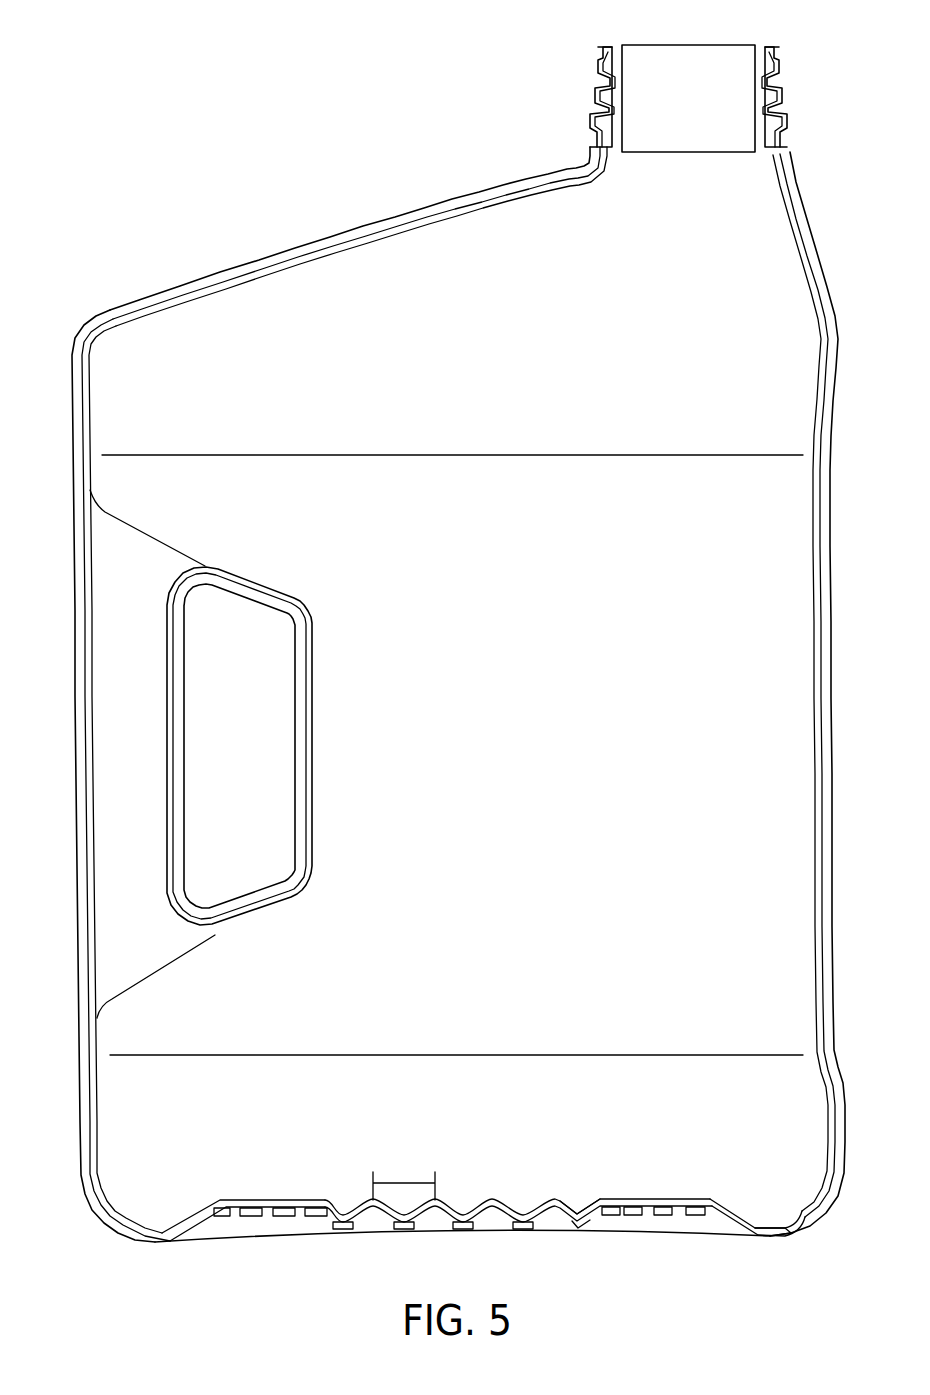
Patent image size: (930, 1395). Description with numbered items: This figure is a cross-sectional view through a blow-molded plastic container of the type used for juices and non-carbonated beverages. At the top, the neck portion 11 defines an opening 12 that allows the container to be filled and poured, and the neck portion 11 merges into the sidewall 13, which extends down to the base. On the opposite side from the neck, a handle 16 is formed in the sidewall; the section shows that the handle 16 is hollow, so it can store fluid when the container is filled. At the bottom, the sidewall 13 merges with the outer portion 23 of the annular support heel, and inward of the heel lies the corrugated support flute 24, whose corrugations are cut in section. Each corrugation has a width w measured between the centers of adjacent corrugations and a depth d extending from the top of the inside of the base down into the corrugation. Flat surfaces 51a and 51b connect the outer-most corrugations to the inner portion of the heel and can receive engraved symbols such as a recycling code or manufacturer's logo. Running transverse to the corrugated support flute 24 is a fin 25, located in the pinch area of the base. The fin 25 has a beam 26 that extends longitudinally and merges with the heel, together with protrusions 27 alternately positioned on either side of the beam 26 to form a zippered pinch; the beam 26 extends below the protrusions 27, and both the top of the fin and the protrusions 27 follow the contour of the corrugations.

The neck portion 11 is at (390, 240).
The opening 12 is at (699, 62).
The sidewall 13 is at (823, 805).
The handle 16 is at (106, 750).
The outer portion of annular support heel 23 is at (773, 1237).
The corrugated support flute 24 is at (492, 1200).
The fin 25 is at (241, 1241).
The beam 26 is at (553, 1235).
The protrusions 27 is at (600, 1214).
The flat surface 51a is at (687, 1198).
The flat surface 51b is at (300, 1200).
The width w is at (400, 1183).
The depth d is at (584, 1203).